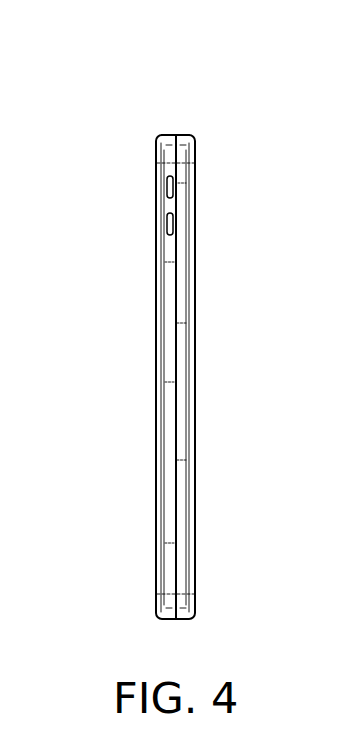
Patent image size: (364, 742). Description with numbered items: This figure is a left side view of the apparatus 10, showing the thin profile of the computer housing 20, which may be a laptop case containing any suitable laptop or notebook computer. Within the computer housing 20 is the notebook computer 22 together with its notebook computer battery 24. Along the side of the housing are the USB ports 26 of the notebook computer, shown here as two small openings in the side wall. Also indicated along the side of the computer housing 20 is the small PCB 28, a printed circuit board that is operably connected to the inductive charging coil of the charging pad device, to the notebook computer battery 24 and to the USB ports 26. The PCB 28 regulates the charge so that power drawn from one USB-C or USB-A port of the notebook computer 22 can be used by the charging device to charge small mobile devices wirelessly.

The apparatus 10 is at (106, 82).
The computer housing 20 is at (198, 167).
The notebook computer 22 is at (196, 190).
The notebook computer battery 24 is at (168, 134).
The USB ports 26 is at (167, 186).
The PCB 28 is at (157, 382).